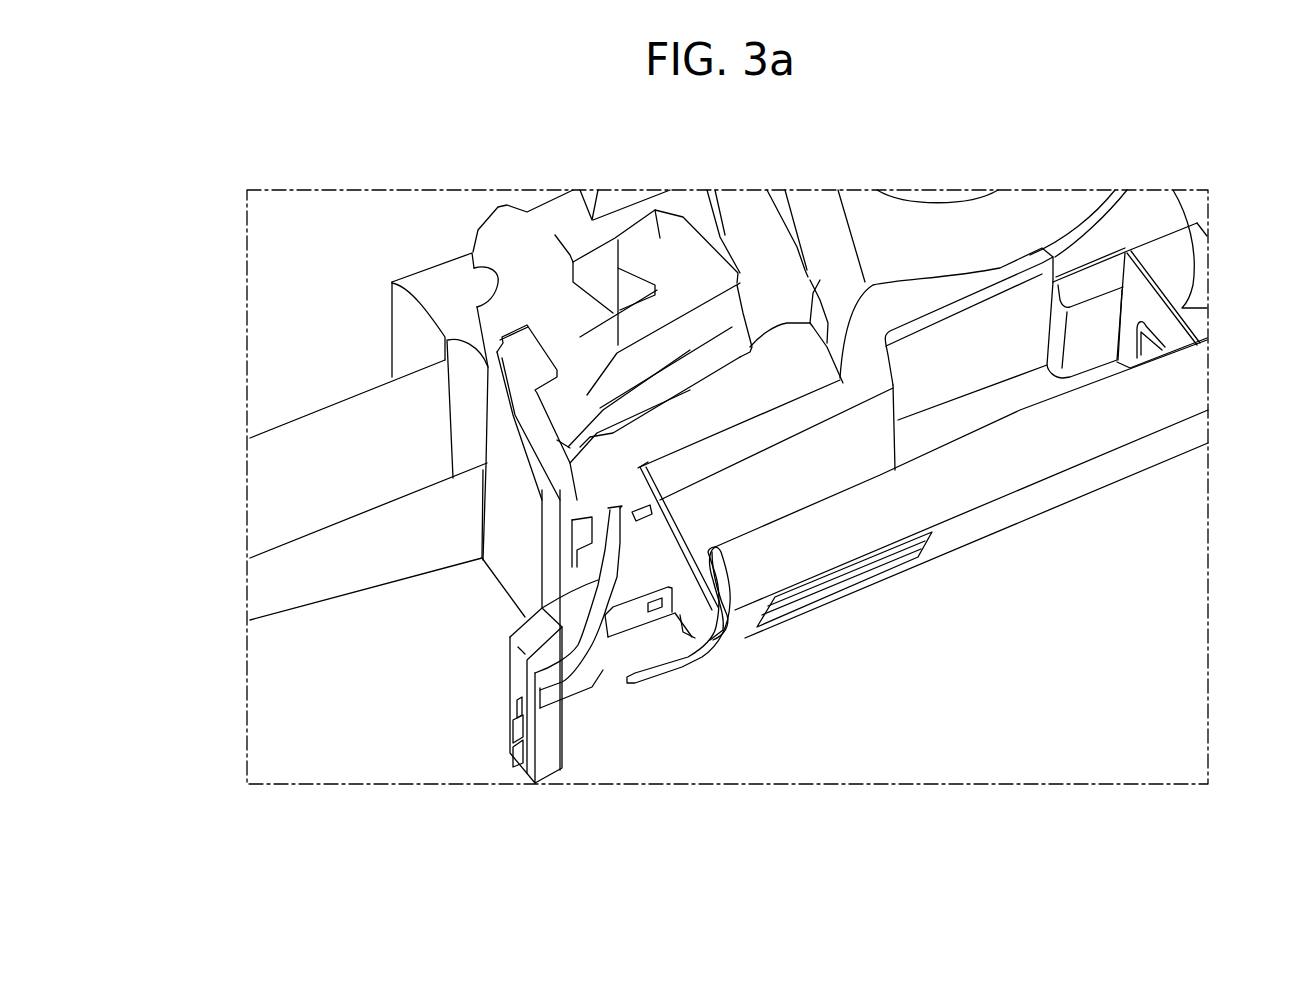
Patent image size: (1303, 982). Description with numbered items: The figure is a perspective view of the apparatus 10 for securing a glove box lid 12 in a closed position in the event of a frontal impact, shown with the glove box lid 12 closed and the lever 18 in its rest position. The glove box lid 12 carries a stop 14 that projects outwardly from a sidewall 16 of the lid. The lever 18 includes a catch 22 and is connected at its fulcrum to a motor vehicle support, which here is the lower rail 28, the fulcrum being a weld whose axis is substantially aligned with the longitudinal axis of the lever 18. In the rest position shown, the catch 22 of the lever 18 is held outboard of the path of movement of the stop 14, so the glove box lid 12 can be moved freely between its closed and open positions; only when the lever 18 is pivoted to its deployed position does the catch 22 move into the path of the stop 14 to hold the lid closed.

The apparatus 10 is at (360, 690).
The glove box lid 12 is at (995, 517).
The stop 14 is at (640, 510).
The sidewall 16 is at (700, 510).
The lever 18 is at (595, 563).
The catch 22 is at (610, 508).
The lower rail 28 is at (593, 668).